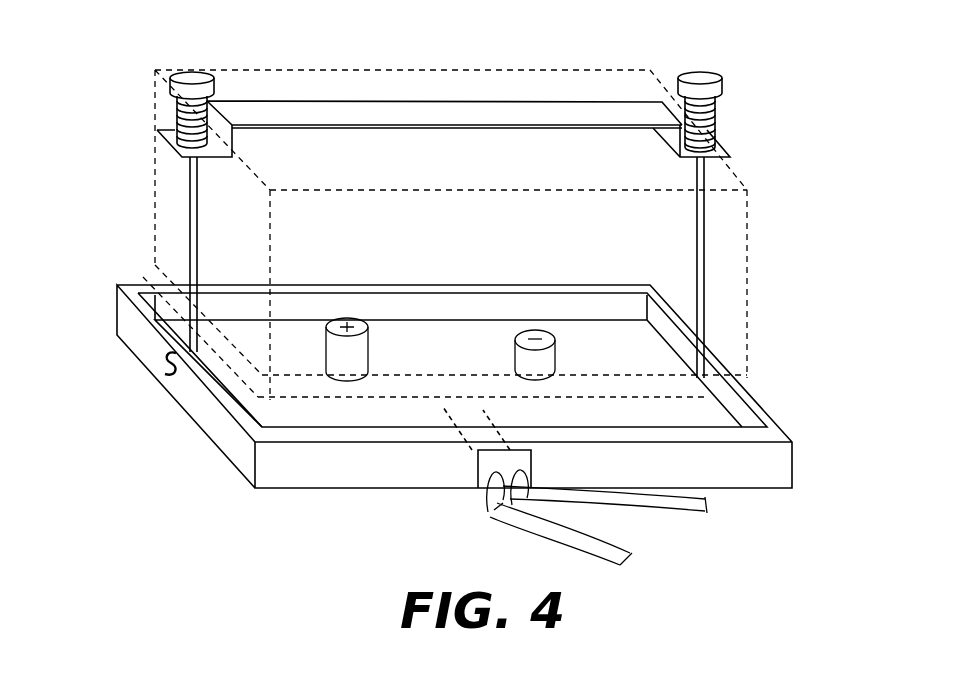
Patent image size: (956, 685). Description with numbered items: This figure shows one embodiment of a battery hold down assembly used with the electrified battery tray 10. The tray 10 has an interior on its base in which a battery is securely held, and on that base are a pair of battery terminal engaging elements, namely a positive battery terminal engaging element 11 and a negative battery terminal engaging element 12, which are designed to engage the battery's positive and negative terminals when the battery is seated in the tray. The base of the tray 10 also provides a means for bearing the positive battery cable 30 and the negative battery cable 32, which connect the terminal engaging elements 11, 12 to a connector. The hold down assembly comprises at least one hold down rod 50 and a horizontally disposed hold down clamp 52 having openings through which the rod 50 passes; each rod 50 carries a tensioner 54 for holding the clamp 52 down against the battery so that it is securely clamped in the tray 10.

The electrified battery tray 10 is at (152, 403).
The positive battery terminal engaging element 11 is at (347, 348).
The negative battery terminal engaging element 12 is at (541, 363).
The positive battery cable 30 is at (513, 524).
The negative battery cable 32 is at (643, 512).
The hold down rod 50 is at (188, 215).
The hold down clamp 52 is at (628, 106).
The tensioner 54 is at (178, 124).